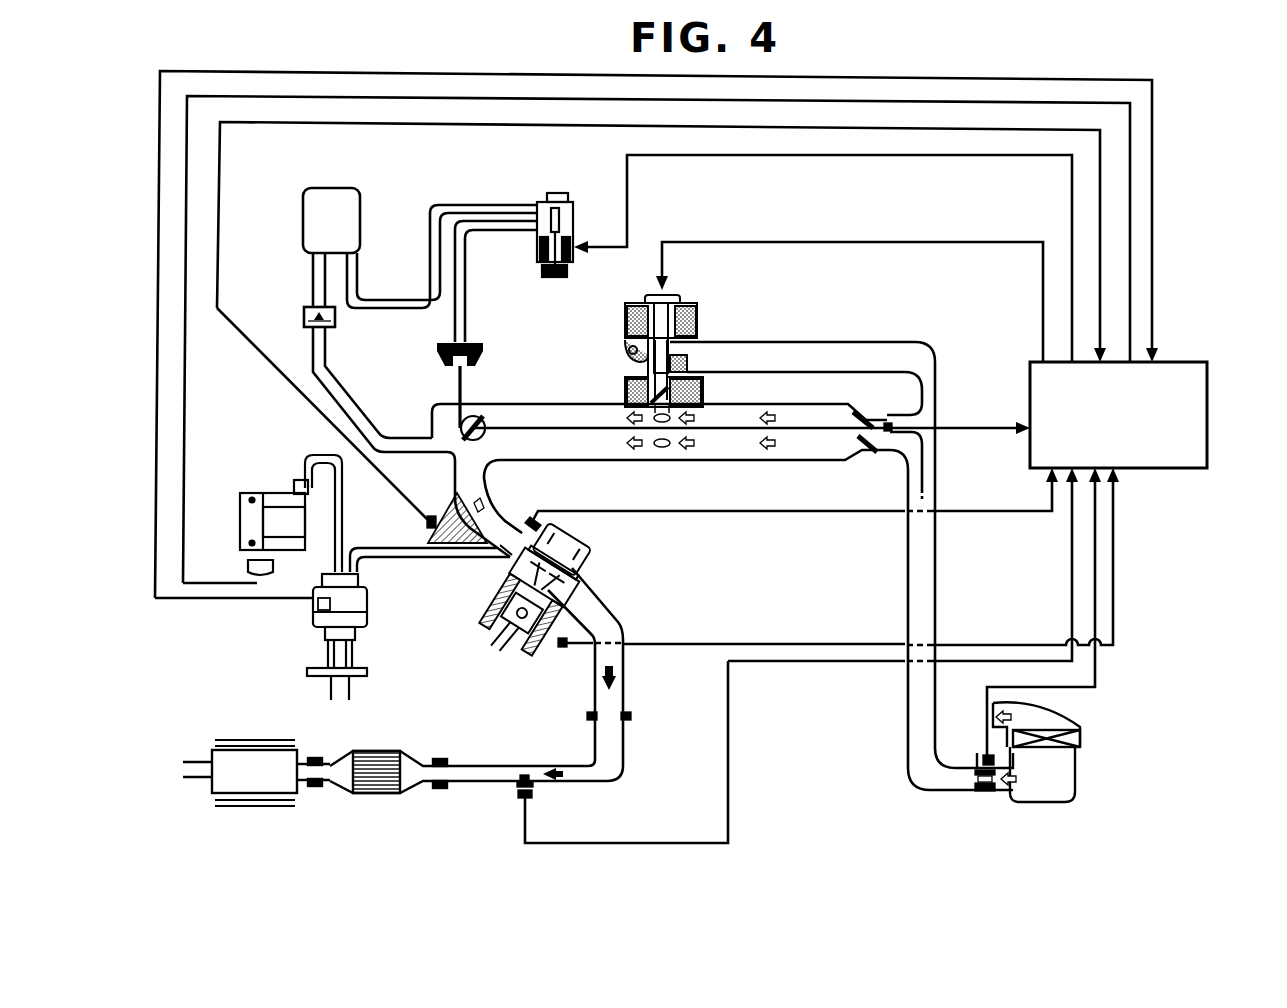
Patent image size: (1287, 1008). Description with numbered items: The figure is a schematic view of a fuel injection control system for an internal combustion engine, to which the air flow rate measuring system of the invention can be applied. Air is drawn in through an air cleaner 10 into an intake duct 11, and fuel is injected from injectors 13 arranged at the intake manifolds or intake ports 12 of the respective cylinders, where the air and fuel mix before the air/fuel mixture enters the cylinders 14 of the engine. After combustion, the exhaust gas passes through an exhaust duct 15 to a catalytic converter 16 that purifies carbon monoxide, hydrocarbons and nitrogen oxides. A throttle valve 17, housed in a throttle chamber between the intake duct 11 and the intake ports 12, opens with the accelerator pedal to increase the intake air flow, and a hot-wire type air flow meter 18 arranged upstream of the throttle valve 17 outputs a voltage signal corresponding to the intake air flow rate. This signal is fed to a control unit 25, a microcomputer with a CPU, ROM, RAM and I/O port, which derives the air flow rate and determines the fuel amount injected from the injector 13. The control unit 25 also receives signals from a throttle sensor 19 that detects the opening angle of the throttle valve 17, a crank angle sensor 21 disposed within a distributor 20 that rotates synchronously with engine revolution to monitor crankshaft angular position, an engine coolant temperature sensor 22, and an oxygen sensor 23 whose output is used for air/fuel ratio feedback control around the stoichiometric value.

The air cleaner 10 is at (1082, 740).
The intake duct 11 is at (907, 732).
The intake port 12 is at (507, 535).
The injector 13 is at (537, 523).
The cylinder 14 is at (513, 587).
The exhaust pipe 15 is at (612, 748).
The catalytic converter 16 is at (397, 751).
The throttle valve 17 is at (873, 423).
The air flow meter 18 is at (980, 793).
The throttle sensor 19 is at (913, 422).
The distributor 20 is at (317, 625).
The crank angle sensor 21 is at (313, 607).
The engine coolant temperature sensor 22 is at (425, 527).
The oxygen sensor 23 is at (518, 797).
The control unit 25 is at (1207, 382).